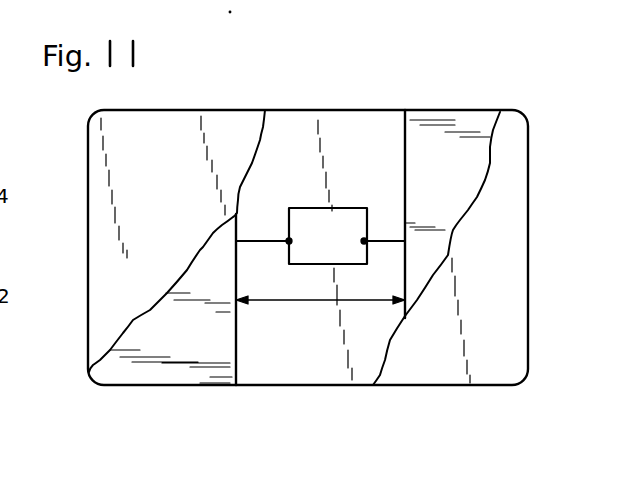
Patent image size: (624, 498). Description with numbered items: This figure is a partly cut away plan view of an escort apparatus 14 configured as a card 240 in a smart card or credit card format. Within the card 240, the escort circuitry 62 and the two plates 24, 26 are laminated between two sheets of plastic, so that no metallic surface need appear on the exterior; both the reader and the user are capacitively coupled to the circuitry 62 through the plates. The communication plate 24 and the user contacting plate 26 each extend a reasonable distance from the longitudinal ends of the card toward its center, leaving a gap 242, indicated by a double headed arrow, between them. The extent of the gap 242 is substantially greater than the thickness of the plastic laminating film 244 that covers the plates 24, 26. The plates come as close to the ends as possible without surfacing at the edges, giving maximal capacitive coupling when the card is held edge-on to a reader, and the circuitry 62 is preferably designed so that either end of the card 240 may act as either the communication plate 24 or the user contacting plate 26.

The escort apparatus 14 is at (303, 96).
The communication plate 24 is at (173, 375).
The user contacting plate 26 is at (418, 116).
The escort circuitry 62 is at (313, 184).
The card 240 is at (538, 249).
The gap 242 is at (310, 305).
The plastic laminating film 244 is at (108, 258).